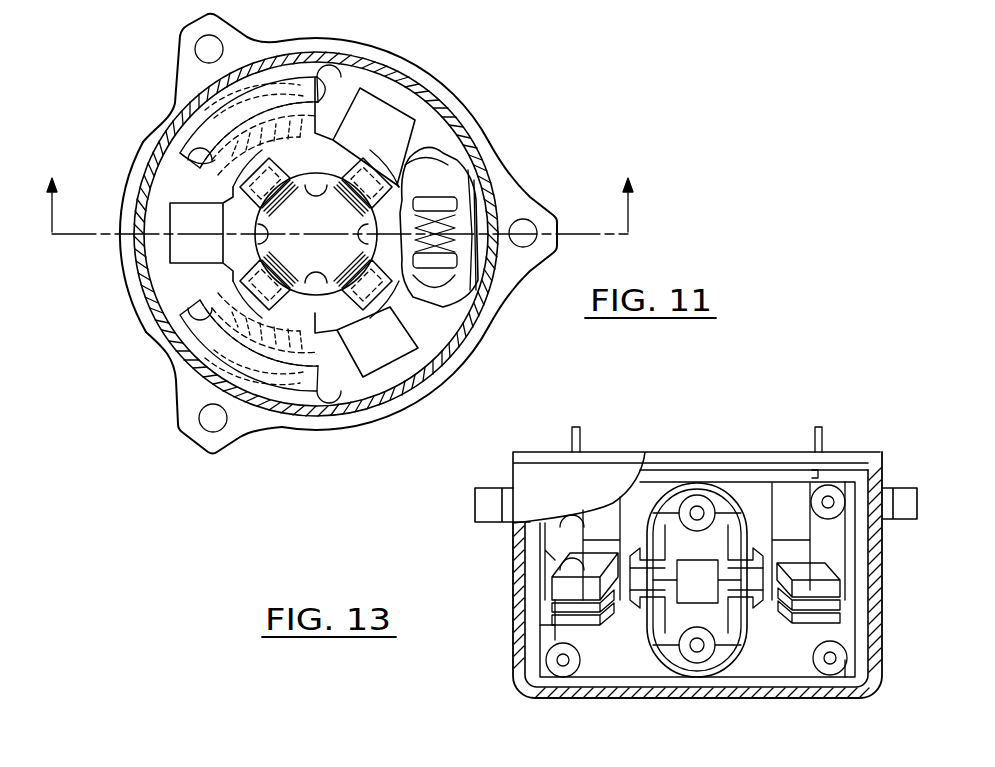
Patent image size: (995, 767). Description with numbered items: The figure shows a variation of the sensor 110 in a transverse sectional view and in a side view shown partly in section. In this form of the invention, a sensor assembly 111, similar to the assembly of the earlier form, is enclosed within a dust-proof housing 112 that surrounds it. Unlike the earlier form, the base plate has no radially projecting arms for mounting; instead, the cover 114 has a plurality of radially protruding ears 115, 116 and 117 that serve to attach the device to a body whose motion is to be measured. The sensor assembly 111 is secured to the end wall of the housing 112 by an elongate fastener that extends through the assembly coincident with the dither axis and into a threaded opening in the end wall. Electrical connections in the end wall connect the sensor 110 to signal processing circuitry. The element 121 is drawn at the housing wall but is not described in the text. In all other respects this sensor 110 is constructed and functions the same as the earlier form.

In FIG. 11, the sensor 110 is at (443, 403).
In FIG. 13, the sensor 110 is at (487, 667).
In FIG. 11, the sensor assembly 111 is at (427, 143).
In FIG. 13, the sensor assembly 111 is at (601, 652).
In FIG. 11, the dust-proof housing 112 is at (166, 342).
In FIG. 13, the cover 114 is at (880, 665).
In FIG. 11, the radially protruding ear 115 is at (234, 448).
In FIG. 11, the radially protruding ear 116 is at (530, 198).
In FIG. 11, the radially protruding ear 117 is at (180, 66).
In FIG. 13, the housing wall 121 is at (655, 700).